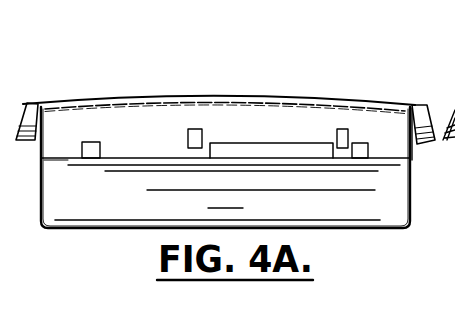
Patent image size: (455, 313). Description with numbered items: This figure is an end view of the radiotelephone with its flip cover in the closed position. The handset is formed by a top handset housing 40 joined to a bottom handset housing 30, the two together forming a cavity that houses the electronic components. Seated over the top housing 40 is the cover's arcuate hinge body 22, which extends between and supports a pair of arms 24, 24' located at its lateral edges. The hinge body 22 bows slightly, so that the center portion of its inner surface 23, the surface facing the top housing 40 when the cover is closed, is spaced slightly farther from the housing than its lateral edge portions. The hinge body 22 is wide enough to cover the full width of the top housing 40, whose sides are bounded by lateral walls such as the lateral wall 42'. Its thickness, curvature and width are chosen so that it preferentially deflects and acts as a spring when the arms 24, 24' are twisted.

The hinge body 22 is at (185, 96).
The inner surface 23 is at (287, 105).
The arm 24 is at (235, 95).
The arm 24' is at (397, 101).
The bottom handset housing 30 is at (87, 232).
The top handset housing 40 is at (63, 127).
The lateral wall 42' is at (433, 158).